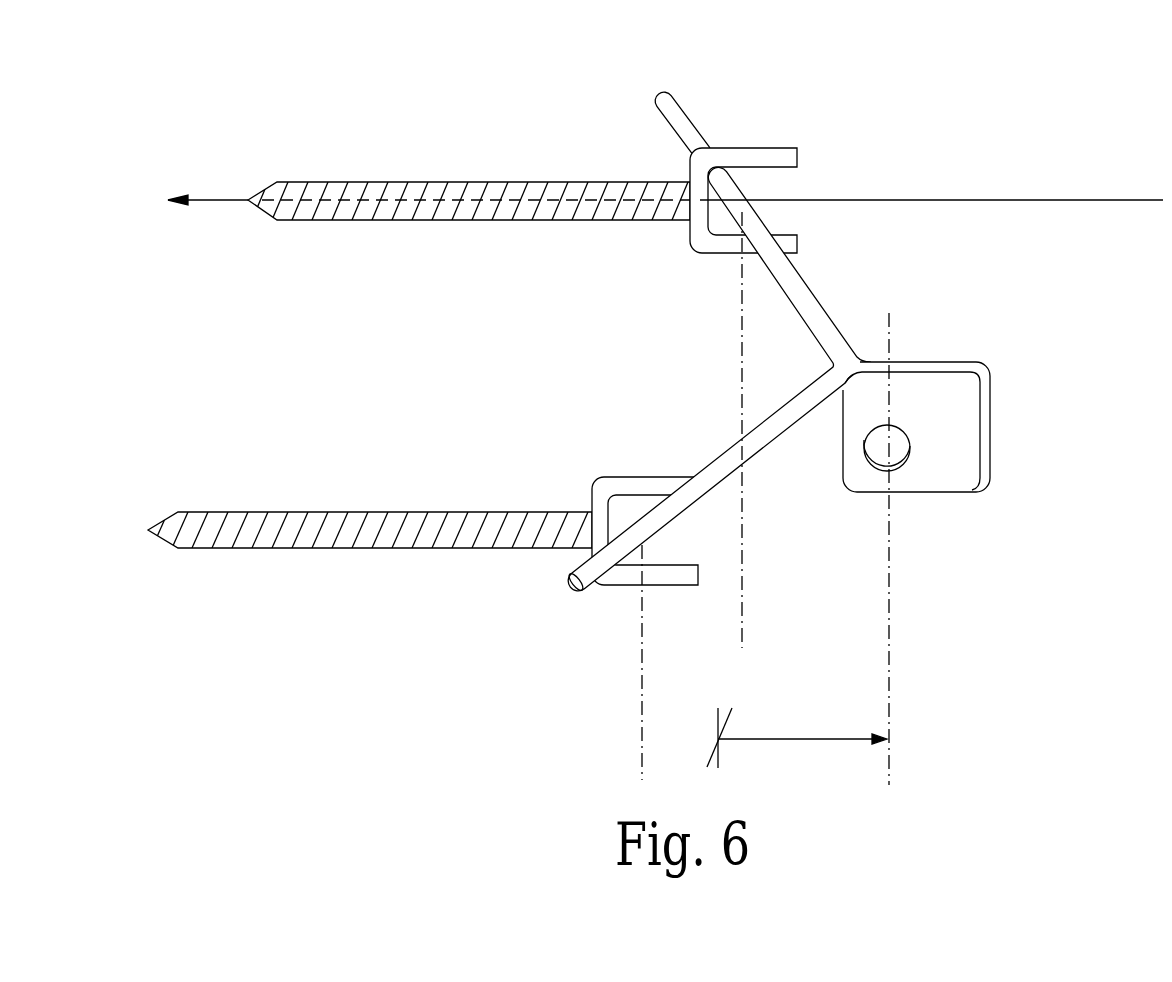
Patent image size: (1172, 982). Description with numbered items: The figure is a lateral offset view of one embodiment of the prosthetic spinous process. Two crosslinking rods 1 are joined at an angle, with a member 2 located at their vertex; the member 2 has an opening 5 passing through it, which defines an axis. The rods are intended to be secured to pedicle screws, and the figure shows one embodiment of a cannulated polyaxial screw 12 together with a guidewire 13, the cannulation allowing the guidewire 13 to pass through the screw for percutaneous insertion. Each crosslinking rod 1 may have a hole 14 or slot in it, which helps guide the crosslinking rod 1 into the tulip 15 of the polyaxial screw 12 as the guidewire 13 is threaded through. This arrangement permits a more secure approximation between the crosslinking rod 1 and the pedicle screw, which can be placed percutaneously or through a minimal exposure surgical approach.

The crosslinking rod 1 is at (788, 397).
The member 2 is at (960, 413).
The opening 5 is at (910, 448).
The cannulated polyaxial screw 12 is at (503, 182).
The guidewire 13 is at (980, 200).
The hole 14 is at (741, 180).
The tulip 15 is at (720, 153).